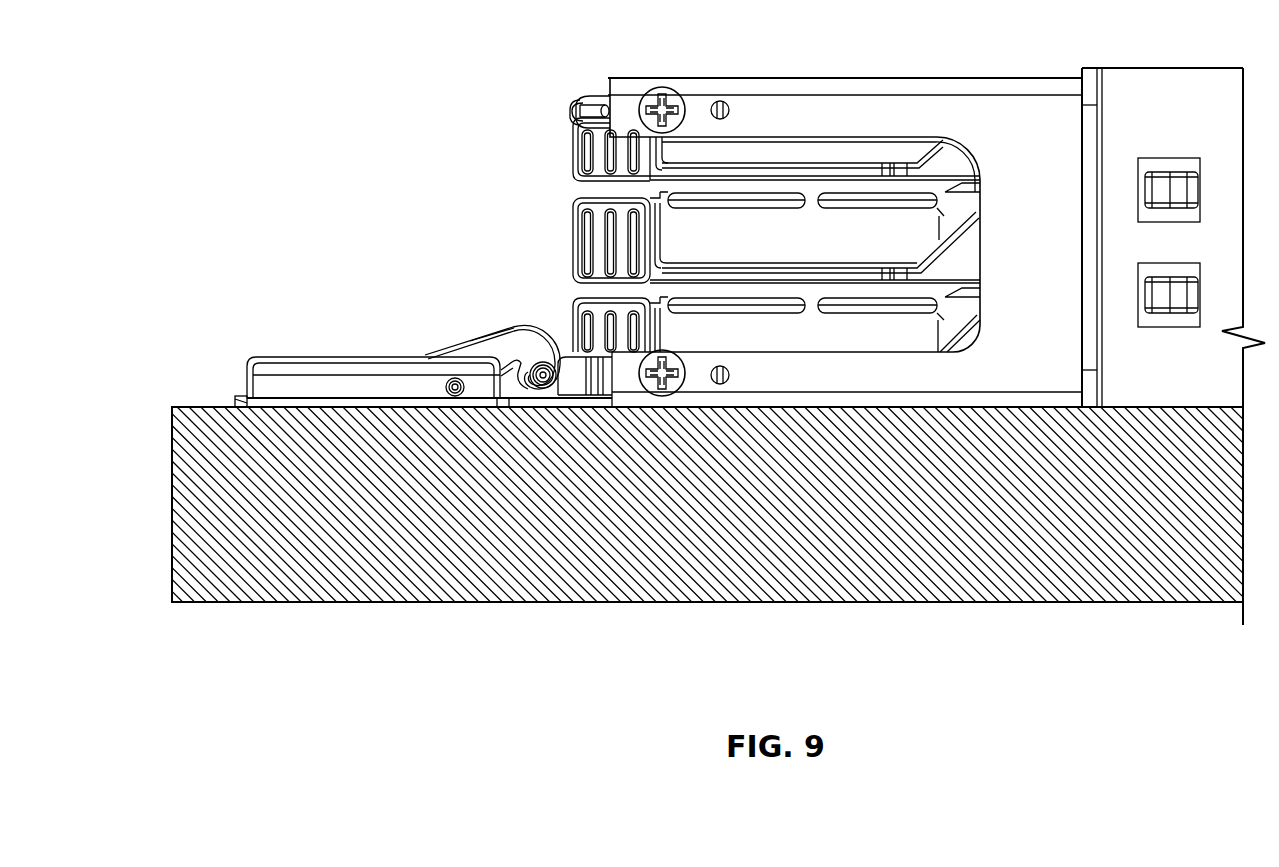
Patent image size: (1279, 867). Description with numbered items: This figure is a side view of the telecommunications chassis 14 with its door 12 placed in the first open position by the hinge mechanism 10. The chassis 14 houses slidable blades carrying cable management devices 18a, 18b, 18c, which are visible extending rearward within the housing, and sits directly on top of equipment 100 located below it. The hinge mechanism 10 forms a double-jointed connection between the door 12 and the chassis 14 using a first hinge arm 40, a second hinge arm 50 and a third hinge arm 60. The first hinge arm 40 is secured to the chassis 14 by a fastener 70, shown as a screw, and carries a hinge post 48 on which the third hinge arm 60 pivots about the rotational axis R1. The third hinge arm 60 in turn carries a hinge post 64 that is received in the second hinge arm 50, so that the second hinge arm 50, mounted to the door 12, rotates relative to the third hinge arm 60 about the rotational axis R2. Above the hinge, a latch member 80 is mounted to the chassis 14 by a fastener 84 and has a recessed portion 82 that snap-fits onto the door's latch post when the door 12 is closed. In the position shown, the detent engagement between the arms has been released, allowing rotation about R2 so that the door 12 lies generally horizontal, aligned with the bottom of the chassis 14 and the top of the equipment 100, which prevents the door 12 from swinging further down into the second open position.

The hinge mechanism 10 is at (435, 256).
The door 12 is at (242, 400).
The telecommunications chassis 14 is at (766, 51).
The cable management device 18a is at (573, 316).
The cable management device 18b is at (575, 222).
The cable management device 18c is at (573, 163).
The first hinge arm 40 is at (573, 372).
The hinge post 48 is at (513, 327).
The second hinge arm 50 is at (328, 368).
The third hinge arm 60 is at (492, 352).
The hinge post 64 is at (455, 378).
The fastener 70 is at (682, 372).
The latch member 80 is at (592, 100).
The recessed portion 82 is at (570, 108).
The fastener 84 is at (653, 98).
The equipment 100 is at (690, 606).
The rotational axis R1 is at (541, 372).
The rotational axis R2 is at (449, 380).